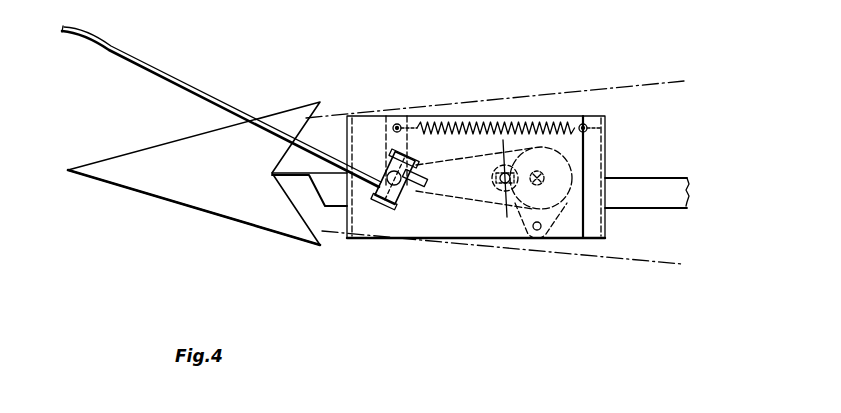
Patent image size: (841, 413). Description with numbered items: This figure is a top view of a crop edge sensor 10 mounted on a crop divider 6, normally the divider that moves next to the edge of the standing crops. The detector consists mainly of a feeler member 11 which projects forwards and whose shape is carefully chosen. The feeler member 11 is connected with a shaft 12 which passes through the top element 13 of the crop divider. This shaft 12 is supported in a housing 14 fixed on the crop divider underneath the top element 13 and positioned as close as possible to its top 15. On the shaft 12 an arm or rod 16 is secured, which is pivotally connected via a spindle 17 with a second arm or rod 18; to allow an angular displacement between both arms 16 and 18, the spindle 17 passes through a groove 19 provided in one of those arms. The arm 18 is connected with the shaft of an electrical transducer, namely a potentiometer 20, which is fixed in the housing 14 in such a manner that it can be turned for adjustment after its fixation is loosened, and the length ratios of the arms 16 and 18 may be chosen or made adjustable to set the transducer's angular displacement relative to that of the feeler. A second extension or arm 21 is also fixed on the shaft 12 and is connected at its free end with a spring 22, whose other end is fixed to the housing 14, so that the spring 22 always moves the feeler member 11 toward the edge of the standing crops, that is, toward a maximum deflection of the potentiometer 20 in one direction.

The crop divider 6 is at (214, 244).
The crop edge sensor 10 is at (242, 62).
The feeler member 11 is at (173, 75).
The shaft 12 is at (384, 201).
The top element of the crop divider 13 is at (641, 87).
The housing 14 is at (495, 236).
The top of the crop divider 15 is at (170, 197).
The arm or rod 16 is at (422, 195).
The spindle 17 is at (500, 184).
The arm or rod 18 is at (535, 185).
The groove 19 is at (469, 195).
The potentiometer 20 is at (578, 167).
The second extension or arm 21 is at (391, 125).
The spring 22 is at (438, 126).